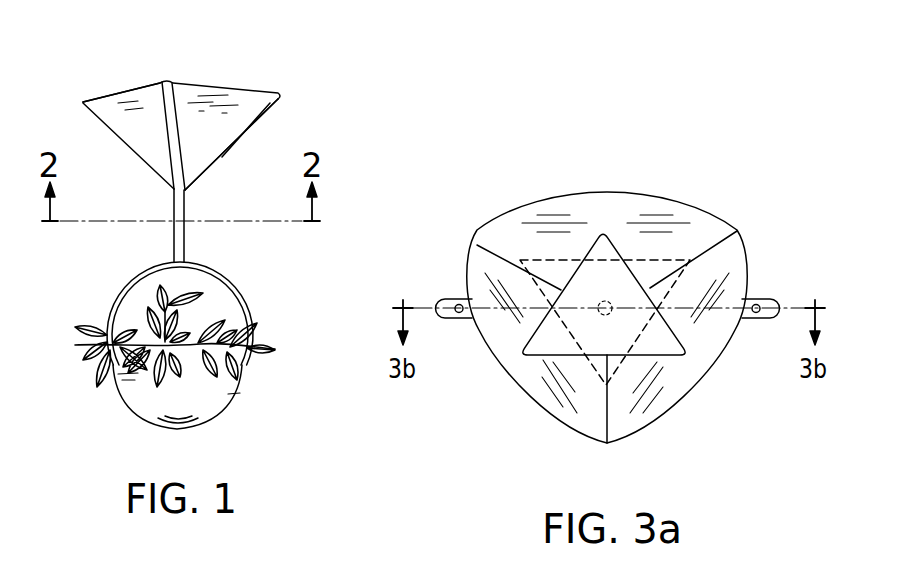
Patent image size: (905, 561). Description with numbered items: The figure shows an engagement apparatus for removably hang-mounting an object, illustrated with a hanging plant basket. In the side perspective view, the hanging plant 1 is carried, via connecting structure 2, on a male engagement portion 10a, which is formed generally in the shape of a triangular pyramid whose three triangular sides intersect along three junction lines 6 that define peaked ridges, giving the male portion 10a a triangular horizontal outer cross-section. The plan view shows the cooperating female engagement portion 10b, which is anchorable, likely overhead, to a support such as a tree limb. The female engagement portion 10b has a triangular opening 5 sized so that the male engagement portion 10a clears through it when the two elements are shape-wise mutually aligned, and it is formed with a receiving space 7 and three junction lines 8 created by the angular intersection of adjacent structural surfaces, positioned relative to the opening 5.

In FIG. 1, the hanging plant 1 is at (133, 402).
In FIG. 1, the connecting structure 2 is at (208, 268).
In FIG. 3A, the triangular opening 5 is at (580, 333).
In FIG. 1, the junction lines 6 is at (137, 110).
In FIG. 3A, the receiving space 7 is at (627, 207).
In FIG. 3A, the junction lines 8 is at (478, 245).
In FIG. 1, the male engagement portion 10a is at (260, 84).
In FIG. 3A, the male engagement portion 10a is at (664, 260).
In FIG. 3A, the female engagement portion 10b is at (578, 192).